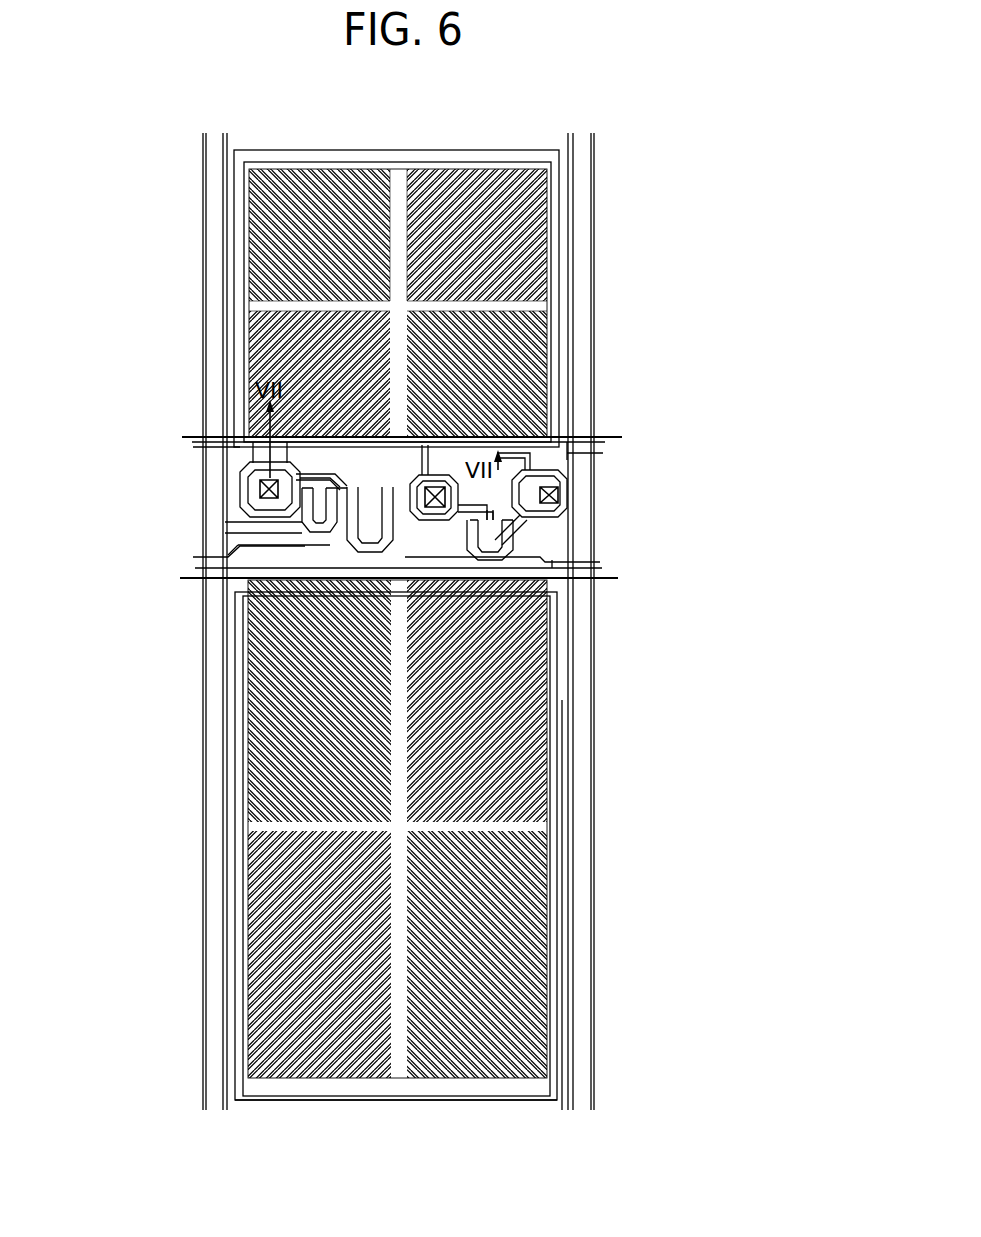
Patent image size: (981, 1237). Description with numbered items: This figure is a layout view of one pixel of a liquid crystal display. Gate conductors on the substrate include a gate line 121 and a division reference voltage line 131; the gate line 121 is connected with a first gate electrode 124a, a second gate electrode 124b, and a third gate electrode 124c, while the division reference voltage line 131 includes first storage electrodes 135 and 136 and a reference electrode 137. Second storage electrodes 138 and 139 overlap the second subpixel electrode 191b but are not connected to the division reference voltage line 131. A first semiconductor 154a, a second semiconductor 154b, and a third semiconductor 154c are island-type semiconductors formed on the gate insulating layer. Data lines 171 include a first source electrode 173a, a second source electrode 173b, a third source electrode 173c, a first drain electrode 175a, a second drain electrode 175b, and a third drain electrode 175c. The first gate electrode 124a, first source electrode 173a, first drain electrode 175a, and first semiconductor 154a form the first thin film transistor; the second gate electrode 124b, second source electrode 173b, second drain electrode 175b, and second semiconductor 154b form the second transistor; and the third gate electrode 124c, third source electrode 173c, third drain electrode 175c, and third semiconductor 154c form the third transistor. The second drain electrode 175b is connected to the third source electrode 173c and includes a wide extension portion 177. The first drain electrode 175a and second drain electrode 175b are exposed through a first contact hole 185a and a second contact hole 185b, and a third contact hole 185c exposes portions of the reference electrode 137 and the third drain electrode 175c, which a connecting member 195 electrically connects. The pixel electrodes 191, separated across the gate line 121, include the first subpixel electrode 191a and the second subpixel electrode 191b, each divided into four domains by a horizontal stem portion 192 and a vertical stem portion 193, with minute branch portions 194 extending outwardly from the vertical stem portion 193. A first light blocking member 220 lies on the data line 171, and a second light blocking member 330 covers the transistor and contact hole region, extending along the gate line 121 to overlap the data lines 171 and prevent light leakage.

The gate line 121 is at (200, 557).
The first gate electrode 124a is at (318, 490).
The second gate electrode 124b is at (377, 482).
The third gate electrode 124c is at (535, 548).
The division reference voltage line 131 is at (603, 453).
The first storage electrode 135 is at (562, 266).
The first storage electrode 136 is at (298, 150).
The reference electrode 137 is at (505, 474).
The second storage electrode 138 is at (560, 908).
The second storage electrode 139 is at (498, 1103).
The first semiconductor 154a is at (338, 500).
The second semiconductor 154b is at (357, 508).
The third semiconductor 154c is at (470, 540).
The data line 171 is at (206, 180).
The first source electrode 173a is at (300, 524).
The second source electrode 173b is at (474, 524).
The third source electrode 173c is at (515, 530).
The first drain electrode 175a is at (305, 490).
The second drain electrode 175b is at (352, 538).
The third drain electrode 175c is at (498, 545).
The wide extension portion 177 is at (428, 470).
The first contact hole 185a is at (250, 489).
The second contact hole 185b is at (437, 486).
The third contact hole 185c is at (560, 495).
The pixel electrode 191 is at (687, 1030).
The first subpixel electrode 191a is at (243, 283).
The second subpixel electrode 191b is at (242, 742).
The horizontal stem portion 192 is at (520, 304).
The vertical stem portion 193 is at (400, 195).
The minute branch portion 194 is at (512, 208).
The connecting member 195 is at (567, 512).
The first light blocking member 220 is at (598, 180).
The second light blocking member 330 is at (622, 437).